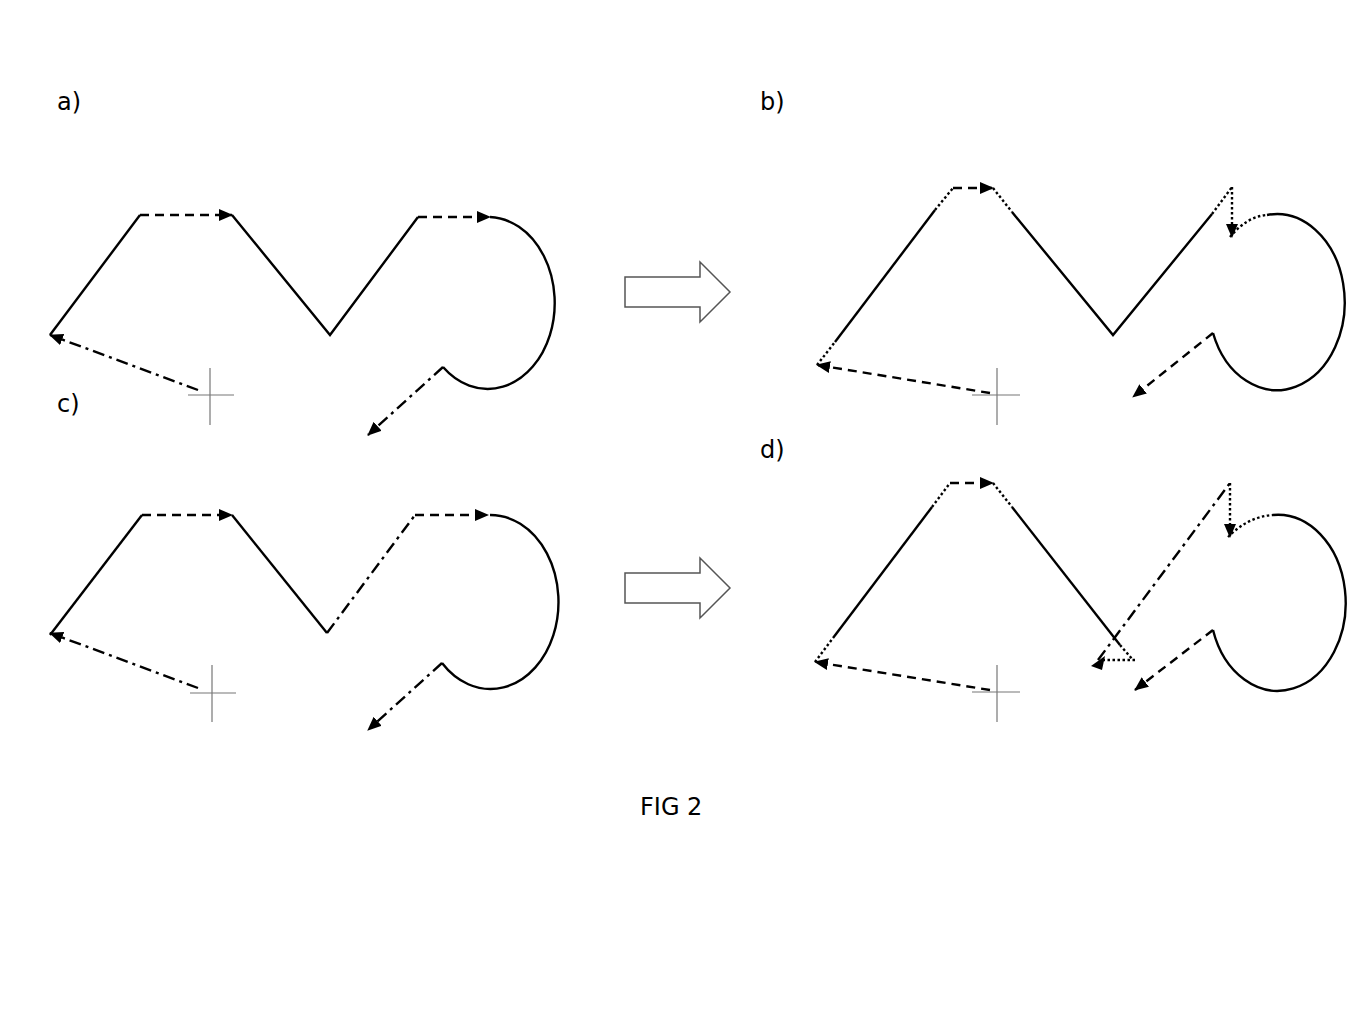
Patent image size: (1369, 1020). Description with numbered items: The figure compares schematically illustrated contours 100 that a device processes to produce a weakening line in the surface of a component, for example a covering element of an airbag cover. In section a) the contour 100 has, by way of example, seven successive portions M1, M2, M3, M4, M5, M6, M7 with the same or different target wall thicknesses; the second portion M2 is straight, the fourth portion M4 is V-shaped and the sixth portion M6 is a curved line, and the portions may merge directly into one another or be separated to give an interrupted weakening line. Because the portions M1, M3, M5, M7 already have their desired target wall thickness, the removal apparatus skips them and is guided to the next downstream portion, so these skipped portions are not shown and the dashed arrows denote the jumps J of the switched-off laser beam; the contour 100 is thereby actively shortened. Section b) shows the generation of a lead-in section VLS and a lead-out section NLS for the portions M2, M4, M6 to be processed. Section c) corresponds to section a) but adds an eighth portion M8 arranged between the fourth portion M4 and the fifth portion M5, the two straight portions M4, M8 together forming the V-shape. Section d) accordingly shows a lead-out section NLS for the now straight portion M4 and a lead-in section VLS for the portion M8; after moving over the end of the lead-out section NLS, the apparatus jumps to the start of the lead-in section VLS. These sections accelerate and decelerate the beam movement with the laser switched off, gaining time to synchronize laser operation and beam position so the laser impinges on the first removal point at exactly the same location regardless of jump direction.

The contour 100 is at (115, 205).
The first portion M1 is at (75, 355).
The second portion M2 is at (108, 265).
The third portion M3 is at (190, 215).
The fourth portion M4 is at (283, 277).
The fifth portion M5 is at (443, 215).
The sixth portion M6 is at (557, 318).
The seventh portion M7 is at (425, 390).
The eighth portion M8 is at (387, 556).
The jump J is at (978, 187).
The lead-out section NLS is at (942, 198).
The lead-in section VLS is at (1013, 207).